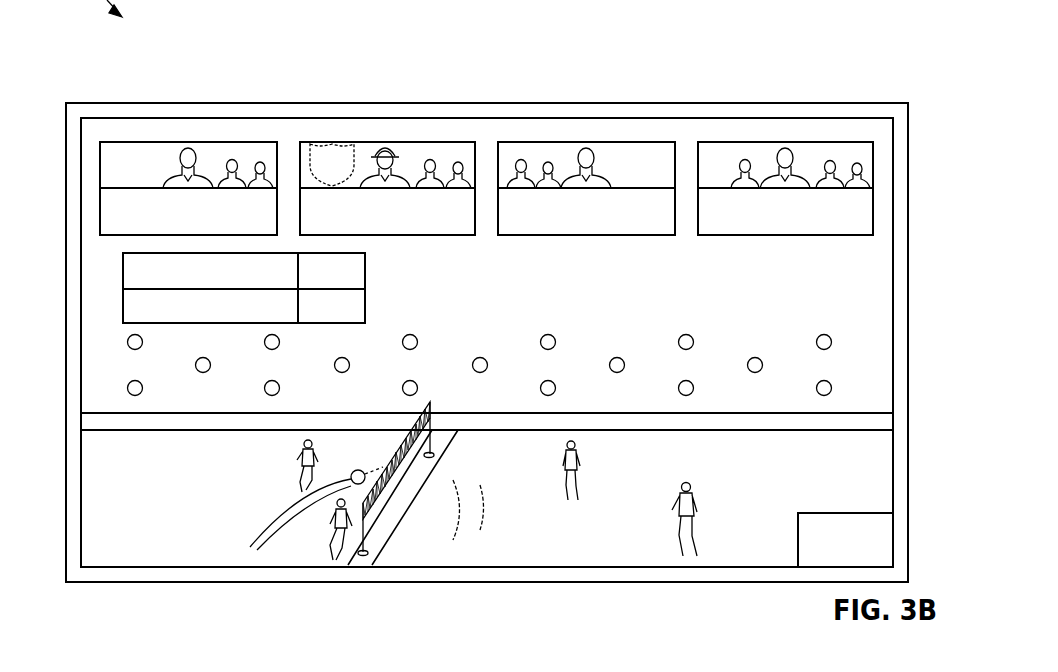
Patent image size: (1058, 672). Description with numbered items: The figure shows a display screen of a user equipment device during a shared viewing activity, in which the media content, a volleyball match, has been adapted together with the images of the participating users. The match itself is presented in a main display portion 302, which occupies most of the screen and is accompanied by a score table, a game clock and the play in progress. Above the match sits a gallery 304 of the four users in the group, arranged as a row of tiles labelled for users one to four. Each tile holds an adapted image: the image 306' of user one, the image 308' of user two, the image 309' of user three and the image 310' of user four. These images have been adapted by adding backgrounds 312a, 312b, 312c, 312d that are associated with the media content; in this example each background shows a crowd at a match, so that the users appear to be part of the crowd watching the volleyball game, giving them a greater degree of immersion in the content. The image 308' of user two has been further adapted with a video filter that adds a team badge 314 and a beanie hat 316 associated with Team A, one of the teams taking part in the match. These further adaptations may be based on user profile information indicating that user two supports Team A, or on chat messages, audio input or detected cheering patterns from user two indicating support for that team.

The main display portion 302 is at (849, 316).
The gallery 304 is at (74, 99).
The image of user 1 306' is at (177, 132).
The image of user 2 308' is at (365, 126).
The image of user 3 309' is at (586, 132).
The image of user 4 310' is at (785, 132).
The background 312a is at (133, 155).
The background 312b is at (362, 103).
The background 312c is at (573, 134).
The background 312d is at (771, 131).
The team badge 314 is at (313, 133).
The beanie hat 316 is at (389, 134).